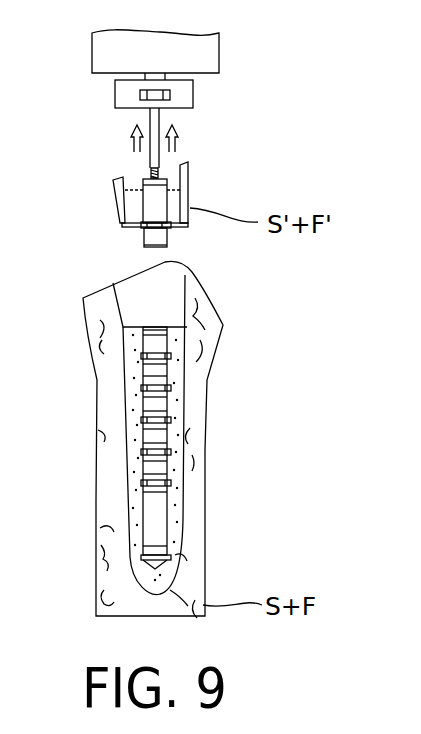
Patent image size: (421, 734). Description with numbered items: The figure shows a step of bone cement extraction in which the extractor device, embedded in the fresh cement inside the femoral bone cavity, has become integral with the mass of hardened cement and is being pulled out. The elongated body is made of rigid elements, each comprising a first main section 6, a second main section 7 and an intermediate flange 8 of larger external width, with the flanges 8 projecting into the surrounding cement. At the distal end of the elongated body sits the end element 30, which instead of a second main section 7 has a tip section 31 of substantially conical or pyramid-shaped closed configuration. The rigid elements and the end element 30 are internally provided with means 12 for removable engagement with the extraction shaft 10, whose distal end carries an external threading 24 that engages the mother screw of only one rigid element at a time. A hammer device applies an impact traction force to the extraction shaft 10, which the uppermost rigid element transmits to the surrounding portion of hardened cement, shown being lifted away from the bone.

The extraction shaft 10 is at (147, 160).
The first main section 6 is at (135, 203).
The external threading 24 is at (113, 210).
The means for removable engagement 12 is at (176, 197).
The second main section 7 is at (170, 240).
The flange 8 is at (123, 225).
The end element 30 is at (167, 520).
The tip section 31 is at (163, 572).